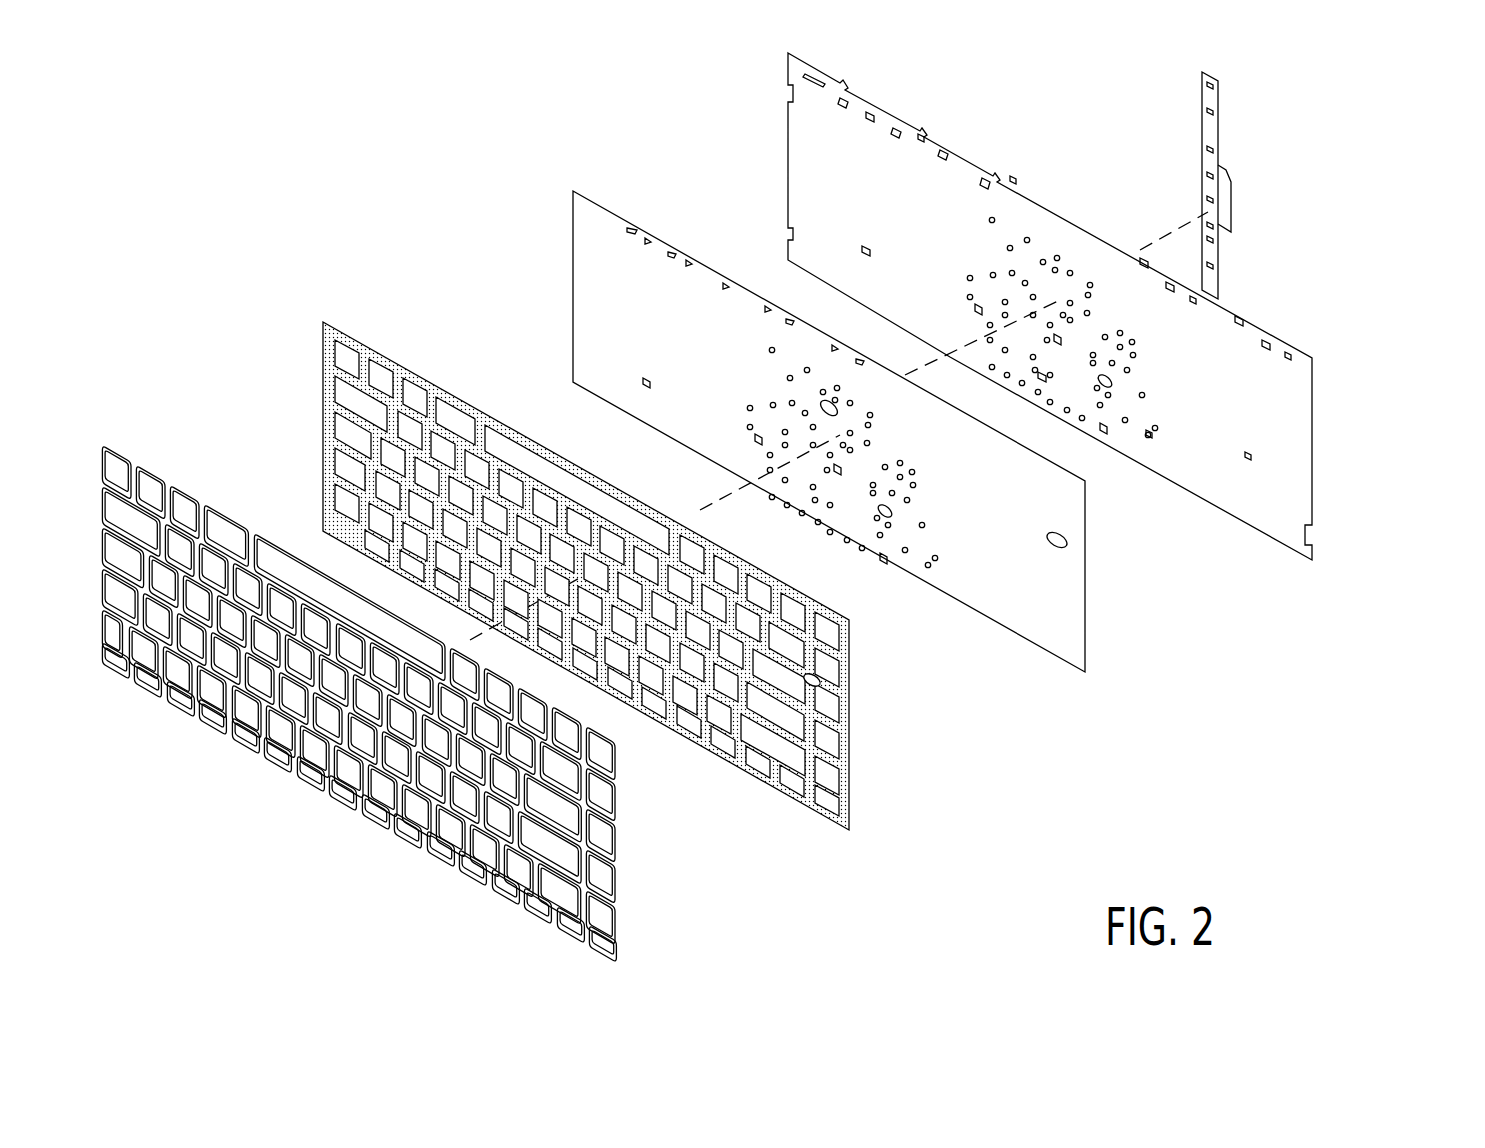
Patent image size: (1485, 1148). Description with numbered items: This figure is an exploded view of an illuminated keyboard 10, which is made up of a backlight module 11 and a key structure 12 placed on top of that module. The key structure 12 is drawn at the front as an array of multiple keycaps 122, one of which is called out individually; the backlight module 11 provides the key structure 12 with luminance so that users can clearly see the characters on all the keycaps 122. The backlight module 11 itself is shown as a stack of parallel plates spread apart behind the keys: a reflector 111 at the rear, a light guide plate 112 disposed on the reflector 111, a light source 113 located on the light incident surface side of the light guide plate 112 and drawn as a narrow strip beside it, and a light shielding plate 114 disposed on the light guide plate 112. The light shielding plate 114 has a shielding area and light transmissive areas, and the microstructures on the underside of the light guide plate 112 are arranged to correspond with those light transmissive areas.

The illuminated keyboard 10 is at (253, 157).
The backlight module 11 is at (1465, 493).
The key structure 12 is at (234, 497).
The reflector 111 is at (1300, 445).
The light guide plate 112 is at (1087, 592).
The light source 113 is at (1212, 152).
The light shielding plate 114 is at (850, 735).
The keycap 122 is at (608, 872).